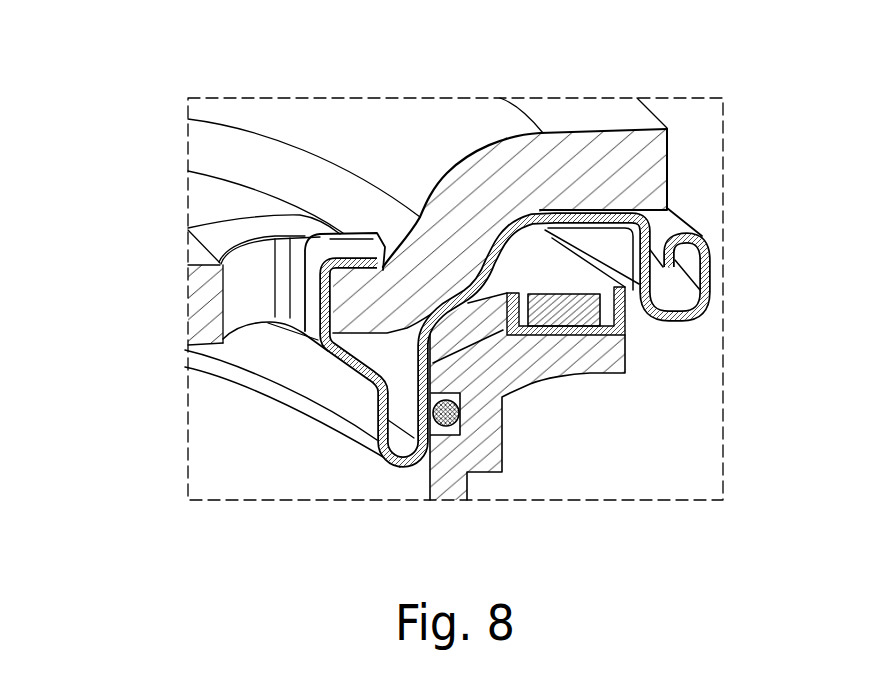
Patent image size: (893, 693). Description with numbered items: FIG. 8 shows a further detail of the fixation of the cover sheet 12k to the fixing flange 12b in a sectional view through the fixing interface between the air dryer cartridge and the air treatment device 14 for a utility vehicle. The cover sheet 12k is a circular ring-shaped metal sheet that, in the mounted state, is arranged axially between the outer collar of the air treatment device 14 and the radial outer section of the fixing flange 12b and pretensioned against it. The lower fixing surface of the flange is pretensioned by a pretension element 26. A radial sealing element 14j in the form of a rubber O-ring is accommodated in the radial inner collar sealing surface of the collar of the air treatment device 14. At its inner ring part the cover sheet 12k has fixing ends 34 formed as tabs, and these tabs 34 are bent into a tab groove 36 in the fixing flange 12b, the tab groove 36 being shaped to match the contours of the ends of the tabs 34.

The fixing flange 12b is at (640, 165).
The cover sheet 12k is at (460, 313).
The air treatment device 14 is at (577, 358).
The radial sealing element 14j is at (446, 413).
The pretension element 26 is at (572, 316).
The fixing ends 34 is at (188, 228).
The tab groove 36 is at (372, 253).